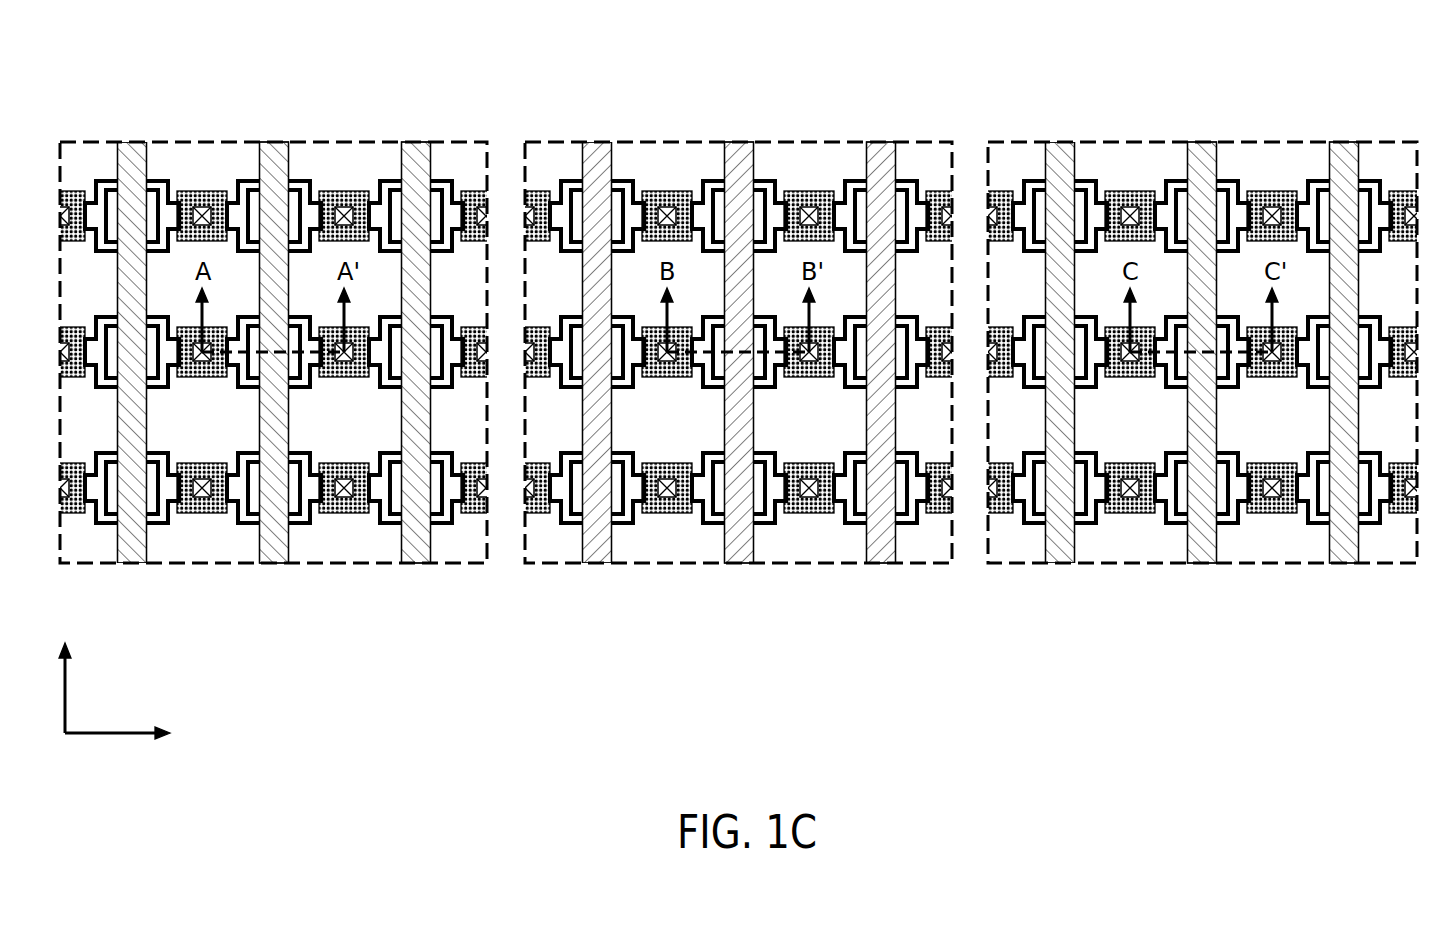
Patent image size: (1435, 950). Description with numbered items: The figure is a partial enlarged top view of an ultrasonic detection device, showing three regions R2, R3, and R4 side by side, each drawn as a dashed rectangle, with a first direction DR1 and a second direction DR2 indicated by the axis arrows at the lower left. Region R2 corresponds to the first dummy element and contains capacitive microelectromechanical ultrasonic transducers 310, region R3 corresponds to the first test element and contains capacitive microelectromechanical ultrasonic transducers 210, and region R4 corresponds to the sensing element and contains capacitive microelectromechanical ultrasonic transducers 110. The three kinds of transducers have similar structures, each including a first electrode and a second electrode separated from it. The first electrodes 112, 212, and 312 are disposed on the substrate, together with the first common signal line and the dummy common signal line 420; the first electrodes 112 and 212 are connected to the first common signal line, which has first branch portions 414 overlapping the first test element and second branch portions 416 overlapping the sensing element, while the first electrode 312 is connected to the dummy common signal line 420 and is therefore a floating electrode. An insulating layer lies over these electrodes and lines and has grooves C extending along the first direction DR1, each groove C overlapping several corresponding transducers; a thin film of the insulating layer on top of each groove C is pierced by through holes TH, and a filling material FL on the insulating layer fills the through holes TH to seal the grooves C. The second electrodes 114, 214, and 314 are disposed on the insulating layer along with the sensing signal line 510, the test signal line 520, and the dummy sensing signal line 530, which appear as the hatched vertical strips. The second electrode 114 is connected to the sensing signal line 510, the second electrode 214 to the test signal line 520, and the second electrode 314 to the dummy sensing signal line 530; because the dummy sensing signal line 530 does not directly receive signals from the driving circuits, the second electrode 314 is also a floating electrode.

The capacitive microelectromechanical ultrasonic transducer 110 is at (1420, 85).
The first electrode 112 is at (1318, 172).
The second electrode 114 is at (1365, 200).
The capacitive microelectromechanical ultrasonic transducer 210 is at (953, 85).
The first electrode 212 is at (853, 172).
The second electrode 214 is at (902, 200).
The capacitive microelectromechanical ultrasonic transducer 310 is at (488, 85).
The first electrode 312 is at (388, 172).
The second electrode 314 is at (438, 200).
The first branch portion 414 is at (768, 160).
The second branch portion 416 is at (1232, 160).
The dummy common signal line 420 is at (302, 160).
The sensing signal line 510 is at (1345, 548).
The test signal line 520 is at (881, 548).
The dummy sensing signal line 530 is at (416, 548).
The through hole TH is at (203, 208).
The filling material FL is at (218, 197).
The groove C is at (445, 530).
The region R2 is at (94, 140).
The region R3 is at (559, 140).
The region R4 is at (1021, 140).
The first direction DR1 is at (121, 757).
The second direction DR2 is at (68, 668).